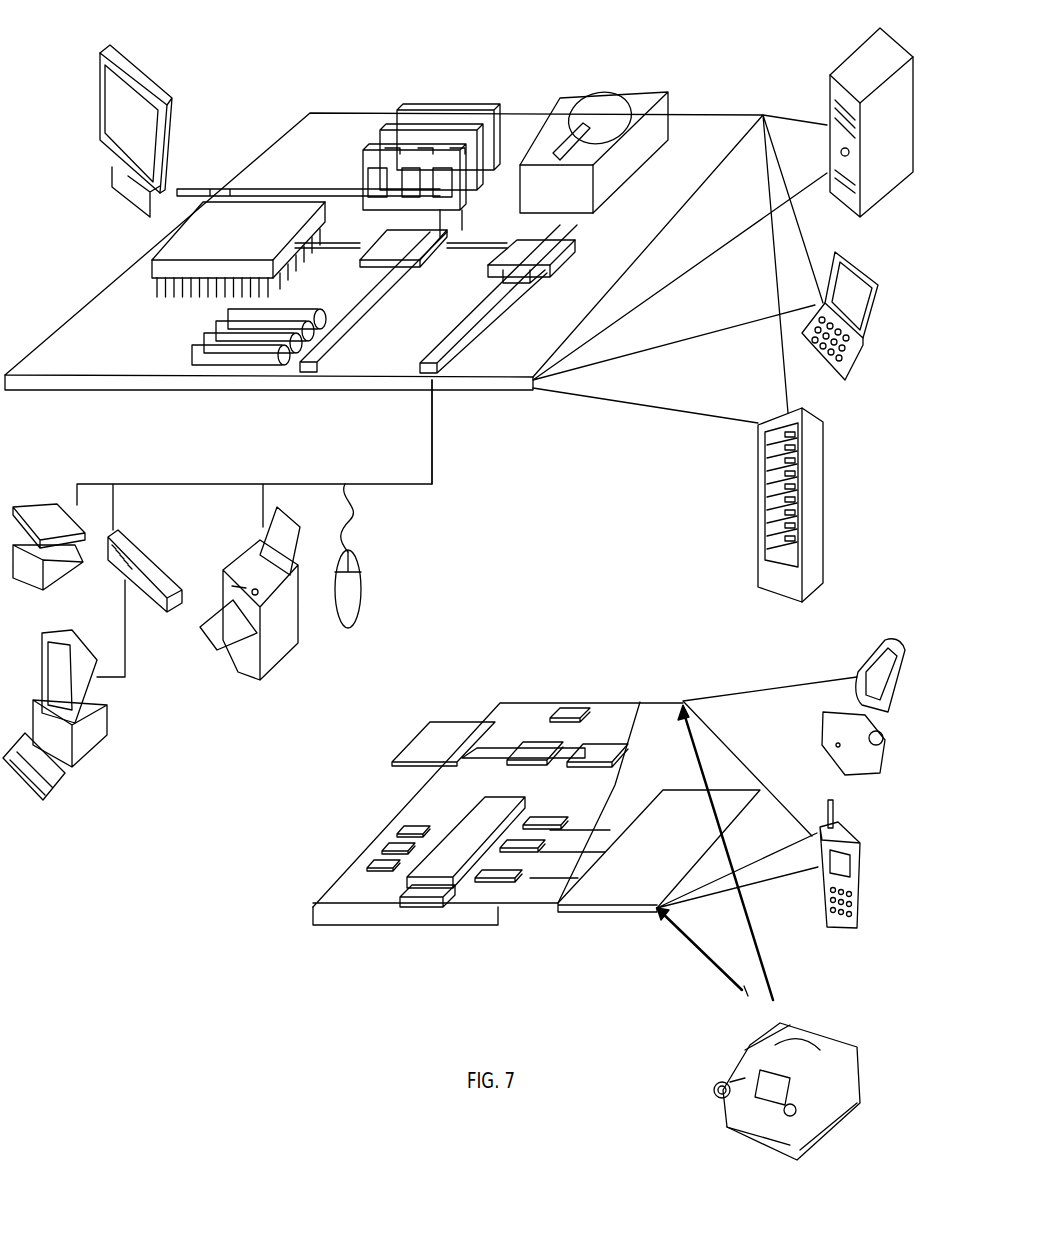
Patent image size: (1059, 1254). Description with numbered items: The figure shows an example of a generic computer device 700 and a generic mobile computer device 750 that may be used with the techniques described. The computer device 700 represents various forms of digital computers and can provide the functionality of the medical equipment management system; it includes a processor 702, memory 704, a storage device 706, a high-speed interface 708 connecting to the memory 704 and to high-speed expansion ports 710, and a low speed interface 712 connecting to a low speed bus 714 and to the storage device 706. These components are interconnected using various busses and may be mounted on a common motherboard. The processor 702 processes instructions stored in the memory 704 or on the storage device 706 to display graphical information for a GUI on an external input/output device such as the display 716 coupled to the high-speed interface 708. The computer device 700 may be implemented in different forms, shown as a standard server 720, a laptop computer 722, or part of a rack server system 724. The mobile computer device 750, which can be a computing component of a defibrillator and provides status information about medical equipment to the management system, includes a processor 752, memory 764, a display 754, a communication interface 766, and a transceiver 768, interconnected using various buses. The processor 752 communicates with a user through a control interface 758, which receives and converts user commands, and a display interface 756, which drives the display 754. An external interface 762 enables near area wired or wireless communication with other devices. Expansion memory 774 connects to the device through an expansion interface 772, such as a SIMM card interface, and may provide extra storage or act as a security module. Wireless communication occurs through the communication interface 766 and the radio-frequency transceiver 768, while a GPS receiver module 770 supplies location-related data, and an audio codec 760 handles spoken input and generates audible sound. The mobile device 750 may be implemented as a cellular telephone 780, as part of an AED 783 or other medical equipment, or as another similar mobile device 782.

The generic computer device 700 is at (252, 82).
The processor 702 is at (158, 267).
The memory 704 is at (417, 102).
The storage device 706 is at (583, 92).
The high-speed interface 708 is at (383, 247).
The high-speed expansion ports 710 is at (210, 340).
The low speed interface 712 is at (518, 243).
The low speed bus 714 is at (482, 397).
The display 716 is at (110, 47).
The standard server 720 is at (830, 92).
The laptop computer 722 is at (875, 285).
The rack server system 724 is at (760, 533).
The generic mobile computer device 750 is at (292, 918).
The processor 752 is at (450, 910).
The display 754 is at (628, 890).
The display interface 756 is at (500, 880).
The control interface 758 is at (527, 850).
The audio codec 760 is at (545, 827).
The external interface 762 is at (422, 913).
The memory 764 is at (405, 857).
The communication interface 766 is at (540, 750).
The transceiver 768 is at (600, 745).
The GPS receiver module 770 is at (580, 707).
The expansion interface 772 is at (483, 717).
The expansion memory 774 is at (432, 717).
The cellular telephone 780 is at (848, 608).
The mobile phone 782 is at (820, 867).
The AED 783 is at (823, 1030).